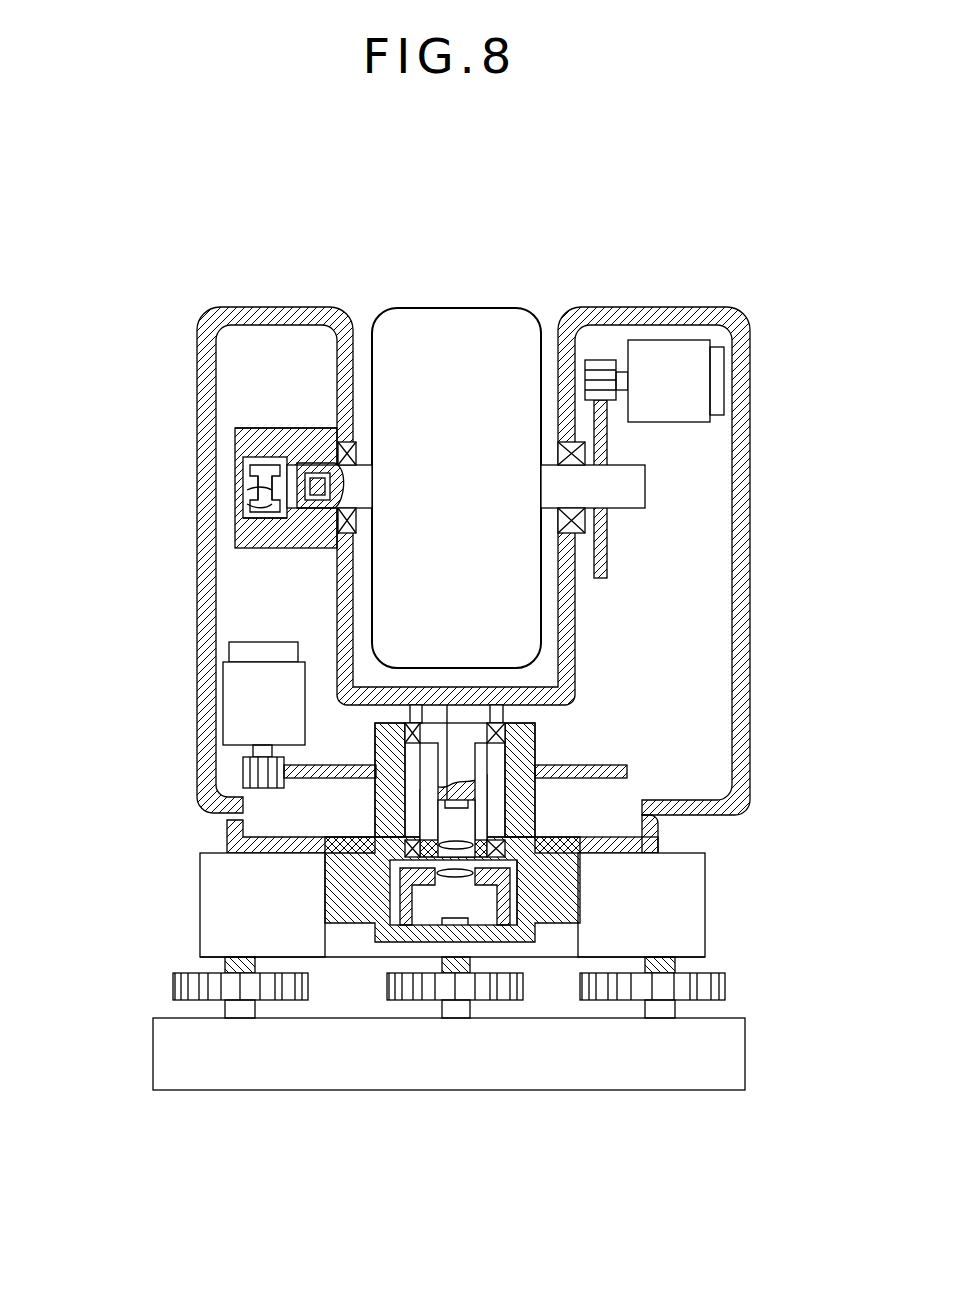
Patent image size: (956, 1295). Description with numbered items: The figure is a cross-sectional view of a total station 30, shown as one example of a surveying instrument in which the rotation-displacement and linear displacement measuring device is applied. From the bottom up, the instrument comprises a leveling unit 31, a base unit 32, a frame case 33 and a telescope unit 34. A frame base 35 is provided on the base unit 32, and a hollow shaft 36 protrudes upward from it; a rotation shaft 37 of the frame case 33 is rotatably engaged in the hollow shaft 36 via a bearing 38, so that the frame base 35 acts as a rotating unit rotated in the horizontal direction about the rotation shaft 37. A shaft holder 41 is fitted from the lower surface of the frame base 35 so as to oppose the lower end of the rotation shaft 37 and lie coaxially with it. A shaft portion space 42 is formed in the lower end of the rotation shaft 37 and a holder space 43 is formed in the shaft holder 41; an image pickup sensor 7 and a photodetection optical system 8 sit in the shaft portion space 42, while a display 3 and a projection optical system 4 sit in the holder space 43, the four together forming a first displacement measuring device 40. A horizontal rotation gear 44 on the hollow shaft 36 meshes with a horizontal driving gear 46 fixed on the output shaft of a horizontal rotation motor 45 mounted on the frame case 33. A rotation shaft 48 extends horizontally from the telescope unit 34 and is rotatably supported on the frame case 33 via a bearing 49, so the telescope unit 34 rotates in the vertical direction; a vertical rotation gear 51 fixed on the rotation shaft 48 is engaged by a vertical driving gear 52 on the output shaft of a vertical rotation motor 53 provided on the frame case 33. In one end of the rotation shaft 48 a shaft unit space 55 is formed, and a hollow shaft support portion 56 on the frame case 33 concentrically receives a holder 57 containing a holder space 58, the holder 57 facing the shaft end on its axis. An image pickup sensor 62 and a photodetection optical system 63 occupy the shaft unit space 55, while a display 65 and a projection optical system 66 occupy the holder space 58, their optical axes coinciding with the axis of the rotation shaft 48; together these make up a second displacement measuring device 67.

The total station 30 is at (246, 202).
The frame case 33 is at (750, 660).
The telescope unit 34 is at (456, 308).
The shaft support portion 56 is at (282, 548).
The holder 57 is at (243, 428).
The holder space 58 is at (258, 516).
The display 65 is at (255, 484).
The projection optical system 66 is at (258, 488).
The second displacement measuring device 67 is at (256, 499).
The shaft unit space 55 is at (290, 487).
The photodetection optical system 63 is at (291, 445).
The image pickup sensor 62 is at (318, 510).
The vertical rotation gear 51 is at (607, 547).
The rotation shaft 48 is at (628, 510).
The bearing 49 is at (558, 455).
The vertical driving gear 52 is at (603, 360).
The vertical rotation motor 53 is at (680, 423).
The horizontal rotation motor 45 is at (223, 706).
The horizontal driving gear 46 is at (243, 774).
The photodetection optical system 8 is at (460, 828).
The bearing 38 is at (507, 834).
The frame base 35 is at (658, 836).
The first displacement measuring device 40 is at (395, 867).
The base unit 32 is at (705, 905).
The projection optical system 4 is at (478, 890).
The holder space 43 is at (475, 907).
The shaft holder 41 is at (518, 907).
The rotation shaft 37 is at (537, 752).
The hollow shaft 36 is at (540, 797).
The shaft portion space 42 is at (448, 817).
The image pickup sensor 7 is at (447, 705).
The horizontal rotation gear 44 is at (603, 767).
The display 3 is at (437, 908).
The leveling unit 31 is at (153, 1040).